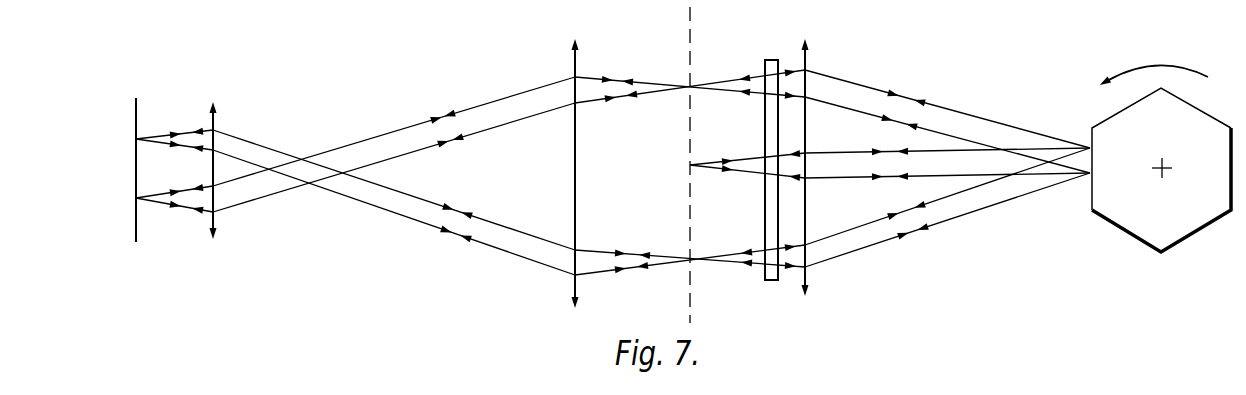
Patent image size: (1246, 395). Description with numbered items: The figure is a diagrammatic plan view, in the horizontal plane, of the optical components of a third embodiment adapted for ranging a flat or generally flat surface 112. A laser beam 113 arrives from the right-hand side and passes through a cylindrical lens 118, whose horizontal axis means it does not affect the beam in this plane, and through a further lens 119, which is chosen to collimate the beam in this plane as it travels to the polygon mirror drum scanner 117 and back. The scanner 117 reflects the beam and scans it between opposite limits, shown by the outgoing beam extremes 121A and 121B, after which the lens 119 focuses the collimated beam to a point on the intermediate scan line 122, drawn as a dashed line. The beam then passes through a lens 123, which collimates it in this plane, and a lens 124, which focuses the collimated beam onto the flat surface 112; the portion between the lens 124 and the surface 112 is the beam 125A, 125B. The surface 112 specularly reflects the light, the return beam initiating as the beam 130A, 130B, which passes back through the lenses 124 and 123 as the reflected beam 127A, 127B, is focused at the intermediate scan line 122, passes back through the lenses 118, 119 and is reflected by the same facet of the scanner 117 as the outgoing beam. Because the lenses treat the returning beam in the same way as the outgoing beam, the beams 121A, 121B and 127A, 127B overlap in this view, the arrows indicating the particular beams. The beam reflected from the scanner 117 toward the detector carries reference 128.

The flat surface 112 is at (138, 225).
The laser beam 113 is at (726, 161).
The polygon mirror drum scanner 117 is at (1113, 227).
The cylindrical lens 118 is at (771, 282).
The lens 119 is at (808, 289).
The outgoing beam limit 121A is at (434, 117).
The outgoing beam limit 121B is at (447, 231).
The intermediate scan line 122 is at (693, 14).
The lens 123 is at (576, 294).
The lens 124 is at (221, 111).
The beam between lens and flat surface 125A is at (198, 212).
The beam between lens and flat surface 125B is at (196, 131).
The reflected beam extreme 127A is at (452, 112).
The reflected beam extreme 127B is at (468, 212).
The returning beam 128 is at (901, 178).
The return specularly reflected beam 130A is at (173, 210).
The return specularly reflected beam 130B is at (176, 131).